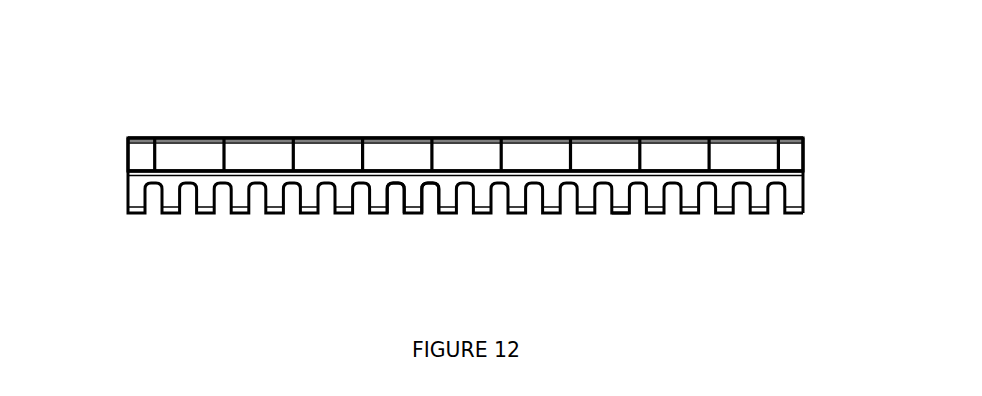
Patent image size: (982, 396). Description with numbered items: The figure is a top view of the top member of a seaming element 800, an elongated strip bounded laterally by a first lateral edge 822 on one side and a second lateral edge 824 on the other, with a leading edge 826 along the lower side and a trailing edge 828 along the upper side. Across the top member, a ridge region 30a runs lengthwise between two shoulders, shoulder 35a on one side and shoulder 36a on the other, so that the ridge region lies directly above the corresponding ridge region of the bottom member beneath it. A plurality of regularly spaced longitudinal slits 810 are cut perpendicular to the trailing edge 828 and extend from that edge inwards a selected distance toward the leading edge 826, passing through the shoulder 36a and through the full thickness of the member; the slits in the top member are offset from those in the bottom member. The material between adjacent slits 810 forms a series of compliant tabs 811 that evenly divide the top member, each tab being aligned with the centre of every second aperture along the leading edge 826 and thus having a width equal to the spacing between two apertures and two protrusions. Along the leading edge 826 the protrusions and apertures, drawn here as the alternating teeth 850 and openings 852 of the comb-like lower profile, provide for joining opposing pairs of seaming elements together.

The seaming element 800 is at (729, 107).
The trailing edge 828 is at (598, 138).
The shoulder 35a is at (137, 136).
The ridge region 30a is at (143, 155).
The shoulder 36a is at (140, 172).
The longitudinal slits 810 is at (490, 137).
The compliant tabs 811 is at (340, 150).
The first lateral edge 822 is at (130, 184).
The second lateral edge 824 is at (805, 178).
The fins 850 is at (277, 198).
The channels 852 is at (432, 200).
The leading edge 826 is at (624, 226).